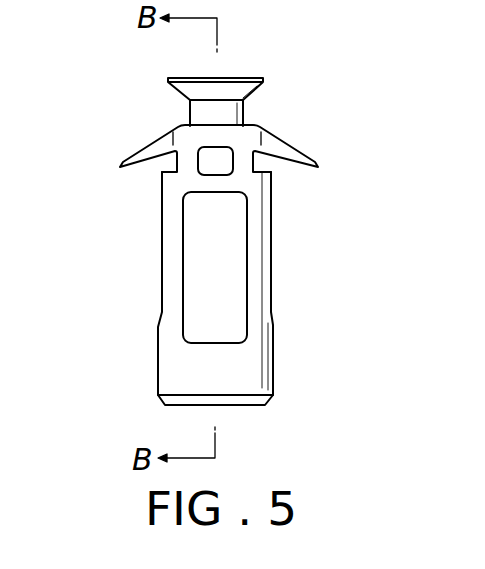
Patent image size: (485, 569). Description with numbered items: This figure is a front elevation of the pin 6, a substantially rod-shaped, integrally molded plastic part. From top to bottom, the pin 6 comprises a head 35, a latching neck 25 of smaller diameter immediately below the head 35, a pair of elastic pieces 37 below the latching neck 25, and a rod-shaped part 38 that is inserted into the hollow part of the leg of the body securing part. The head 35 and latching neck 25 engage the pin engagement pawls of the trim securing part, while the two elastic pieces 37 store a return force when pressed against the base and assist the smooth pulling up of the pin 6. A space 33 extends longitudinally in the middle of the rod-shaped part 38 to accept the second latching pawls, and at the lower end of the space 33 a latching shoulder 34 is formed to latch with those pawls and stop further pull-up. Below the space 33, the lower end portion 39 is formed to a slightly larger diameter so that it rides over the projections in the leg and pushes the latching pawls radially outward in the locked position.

The pin 6 is at (222, 217).
The latching neck 25 is at (200, 115).
The space 33 is at (215, 250).
The latching shoulder 34 is at (215, 343).
The head 35 is at (235, 78).
The elastic pieces 37 is at (134, 154).
The rod-shaped part 38 is at (271, 278).
The lower end portion 39 is at (247, 367).